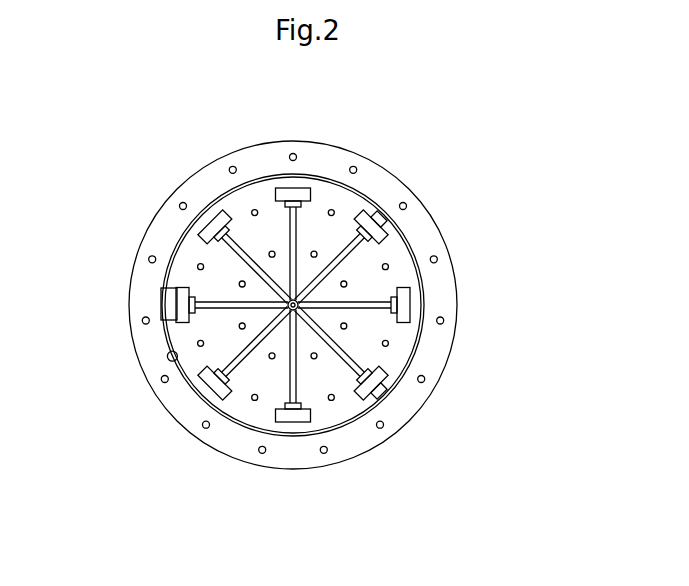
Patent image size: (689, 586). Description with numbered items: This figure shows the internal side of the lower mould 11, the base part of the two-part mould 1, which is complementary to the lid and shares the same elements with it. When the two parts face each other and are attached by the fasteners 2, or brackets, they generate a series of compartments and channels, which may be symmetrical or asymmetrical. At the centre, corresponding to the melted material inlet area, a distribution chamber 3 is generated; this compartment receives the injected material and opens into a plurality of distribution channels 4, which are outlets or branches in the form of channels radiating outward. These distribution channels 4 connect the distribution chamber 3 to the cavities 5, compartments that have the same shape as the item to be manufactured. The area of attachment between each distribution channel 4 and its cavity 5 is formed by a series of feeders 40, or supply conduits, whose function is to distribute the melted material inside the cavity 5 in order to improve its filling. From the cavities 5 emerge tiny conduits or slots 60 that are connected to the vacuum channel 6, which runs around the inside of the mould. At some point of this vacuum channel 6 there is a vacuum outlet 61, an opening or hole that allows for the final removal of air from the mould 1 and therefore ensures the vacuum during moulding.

The mould 1 is at (310, 300).
The lower mould 11 is at (291, 291).
The fasteners 2 is at (390, 264).
The distribution chamber 3 is at (333, 405).
The distribution channels 4 is at (287, 358).
The cavities 5 is at (303, 267).
The vacuum channel 6 is at (422, 337).
The feeders 40 is at (177, 288).
The slots 60 is at (376, 399).
The vacuum outlet 61 is at (166, 361).